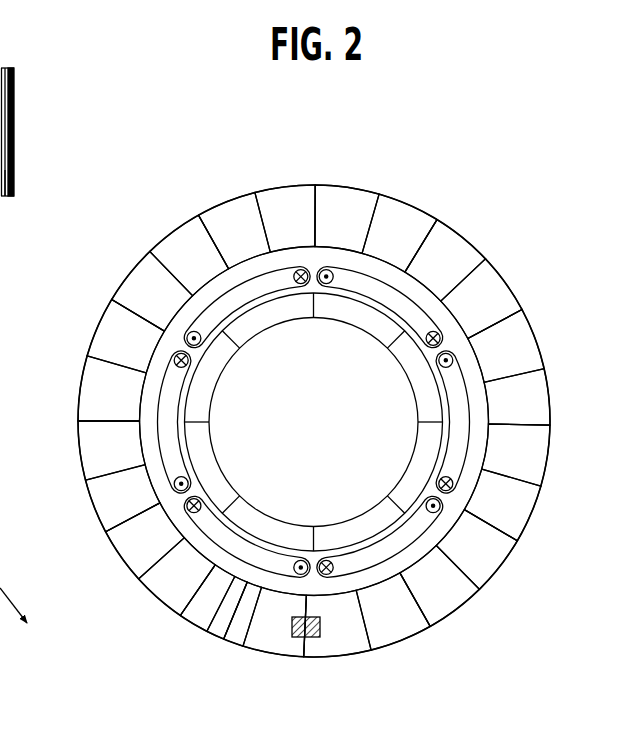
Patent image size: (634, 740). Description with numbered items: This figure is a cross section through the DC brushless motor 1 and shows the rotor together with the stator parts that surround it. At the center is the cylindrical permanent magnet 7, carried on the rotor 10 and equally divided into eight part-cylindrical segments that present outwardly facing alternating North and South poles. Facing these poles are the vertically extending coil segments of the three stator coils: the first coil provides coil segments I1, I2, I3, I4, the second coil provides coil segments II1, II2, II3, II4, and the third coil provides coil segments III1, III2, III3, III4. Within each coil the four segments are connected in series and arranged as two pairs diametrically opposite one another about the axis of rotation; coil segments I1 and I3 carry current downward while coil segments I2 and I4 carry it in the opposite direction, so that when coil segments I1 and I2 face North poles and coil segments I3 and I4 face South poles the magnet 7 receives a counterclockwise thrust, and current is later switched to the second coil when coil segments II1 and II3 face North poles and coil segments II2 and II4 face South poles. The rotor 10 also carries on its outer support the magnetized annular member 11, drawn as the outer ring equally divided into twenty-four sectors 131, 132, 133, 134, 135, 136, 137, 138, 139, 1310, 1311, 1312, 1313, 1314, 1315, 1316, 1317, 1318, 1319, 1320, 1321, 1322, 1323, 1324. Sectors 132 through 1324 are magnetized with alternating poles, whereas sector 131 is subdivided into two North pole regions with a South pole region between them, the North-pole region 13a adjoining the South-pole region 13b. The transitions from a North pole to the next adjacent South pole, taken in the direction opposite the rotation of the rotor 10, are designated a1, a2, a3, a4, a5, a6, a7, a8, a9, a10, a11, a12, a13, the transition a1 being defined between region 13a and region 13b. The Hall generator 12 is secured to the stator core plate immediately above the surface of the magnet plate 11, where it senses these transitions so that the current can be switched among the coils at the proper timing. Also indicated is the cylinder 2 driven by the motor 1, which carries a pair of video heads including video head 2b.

The DC brushless motor 1 is at (2, 632).
The cylinder 2 is at (4, 68).
The video head 2b is at (12, 182).
The cylindrical permanent magnet 7 is at (380, 338).
The rotor 10 is at (327, 437).
The magnetized annular member 11 is at (314, 421).
The Hall generator 12 is at (316, 640).
The North-pole region 13a is at (240, 641).
The South-pole region 13b is at (214, 641).
The sector 131 is at (233, 672).
The sector 132 is at (158, 599).
The sector 133 is at (121, 557).
The sector 134 is at (94, 507).
The sector 135 is at (80, 451).
The sector 136 is at (80, 388).
The sector 137 is at (97, 327).
The sector 138 is at (129, 274).
The sector 139 is at (173, 232).
The sector 1310 is at (226, 202).
The sector 1311 is at (285, 187).
The sector 1312 is at (347, 188).
The sector 1313 is at (409, 205).
The sector 1314 is at (462, 238).
The sector 1315 is at (505, 283).
The sector 1316 is at (535, 338).
The sector 1317 is at (549, 397).
The sector 1318 is at (548, 456).
The sector 1319 is at (531, 515).
The sector 1320 is at (500, 567).
The sector 1321 is at (456, 610).
The sector 1322 is at (402, 641).
The sector 1323 is at (338, 656).
The sector 1324 is at (273, 655).
The transition a1 is at (223, 641).
The transition a2 is at (179, 617).
The transition a3 is at (105, 533).
The transition a4 is at (77, 421).
The transition a5 is at (111, 299).
The transition a6 is at (198, 214).
The transition a7 is at (316, 184).
The transition a8 is at (438, 219).
The transition a9 is at (523, 309).
The transition a10 is at (551, 425).
The transition a11 is at (518, 542).
The transition a12 is at (431, 628).
The transition a13 is at (304, 659).
The coil segment I1 is at (327, 559).
The coil segment I2 is at (426, 506).
The coil segment I3 is at (303, 287).
The coil segment I4 is at (202, 343).
The coil segment II1 is at (438, 475).
The coil segment II2 is at (441, 369).
The coil segment II3 is at (185, 369).
The coil segment II4 is at (187, 478).
The coil segment III1 is at (429, 346).
The coil segment III2 is at (326, 285).
The coil segment III3 is at (201, 503).
The coil segment III4 is at (299, 559).